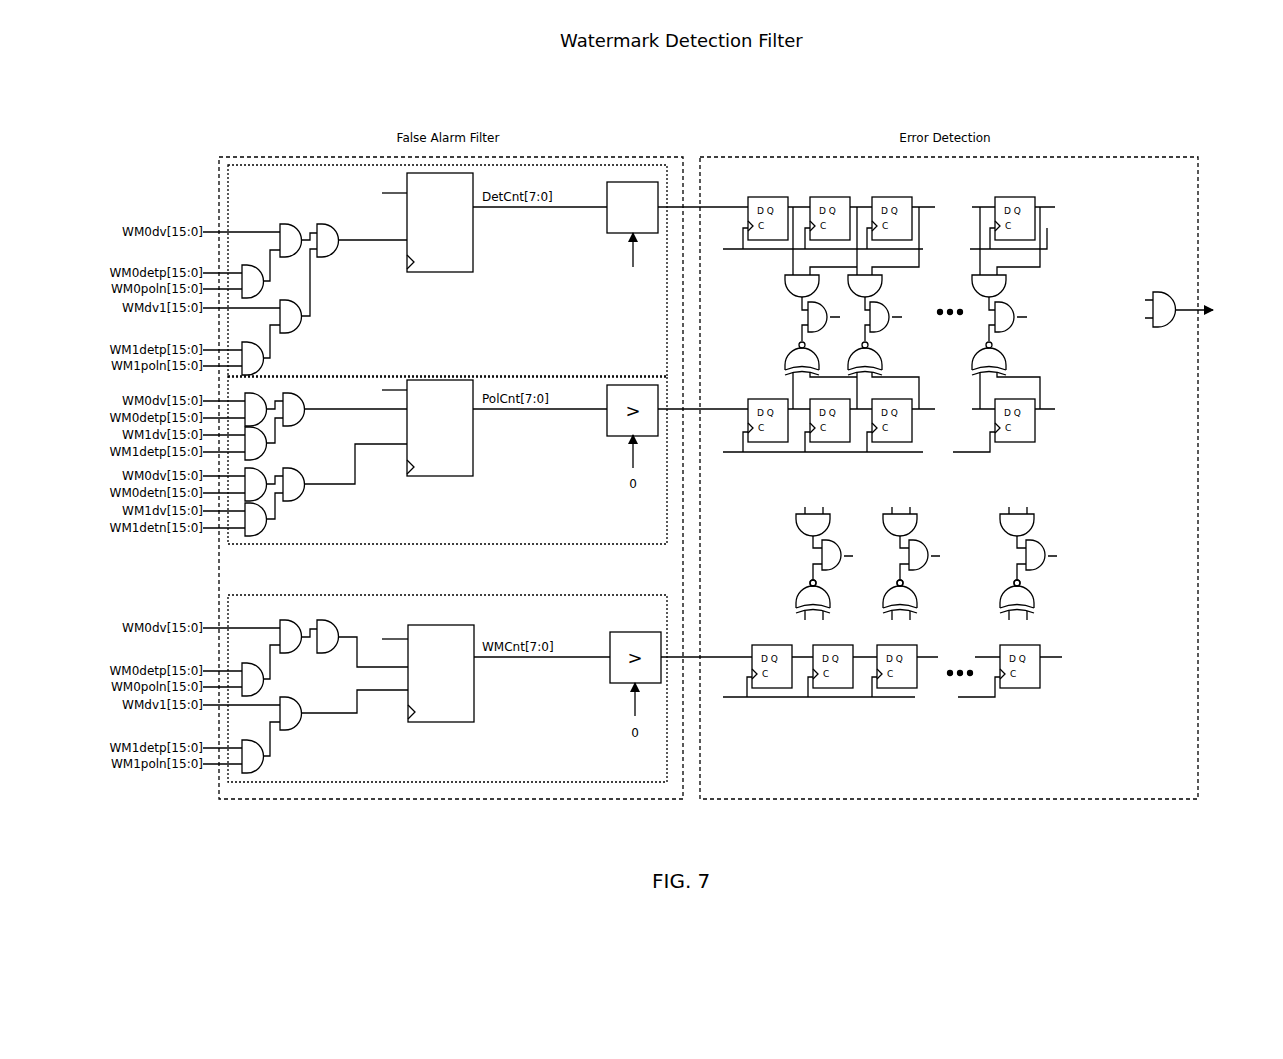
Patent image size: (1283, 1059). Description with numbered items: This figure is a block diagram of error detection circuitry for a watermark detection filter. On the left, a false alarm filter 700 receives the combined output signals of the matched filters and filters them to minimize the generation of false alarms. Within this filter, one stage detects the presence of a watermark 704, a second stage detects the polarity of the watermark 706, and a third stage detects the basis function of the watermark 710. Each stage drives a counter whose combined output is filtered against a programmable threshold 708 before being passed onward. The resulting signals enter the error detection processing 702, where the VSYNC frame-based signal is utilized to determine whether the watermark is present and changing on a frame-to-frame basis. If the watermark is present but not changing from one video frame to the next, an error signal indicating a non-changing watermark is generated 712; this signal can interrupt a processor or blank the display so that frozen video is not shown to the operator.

The false alarm filter 700 is at (238, 809).
The error detection processing 702 is at (797, 809).
The watermark presence detection filter 704 is at (485, 173).
The watermark polarity detection filter 706 is at (485, 373).
The programmable threshold 708 is at (630, 183).
The watermark basis function detection filter 710 is at (452, 765).
The error signal generation 712 is at (1185, 290).